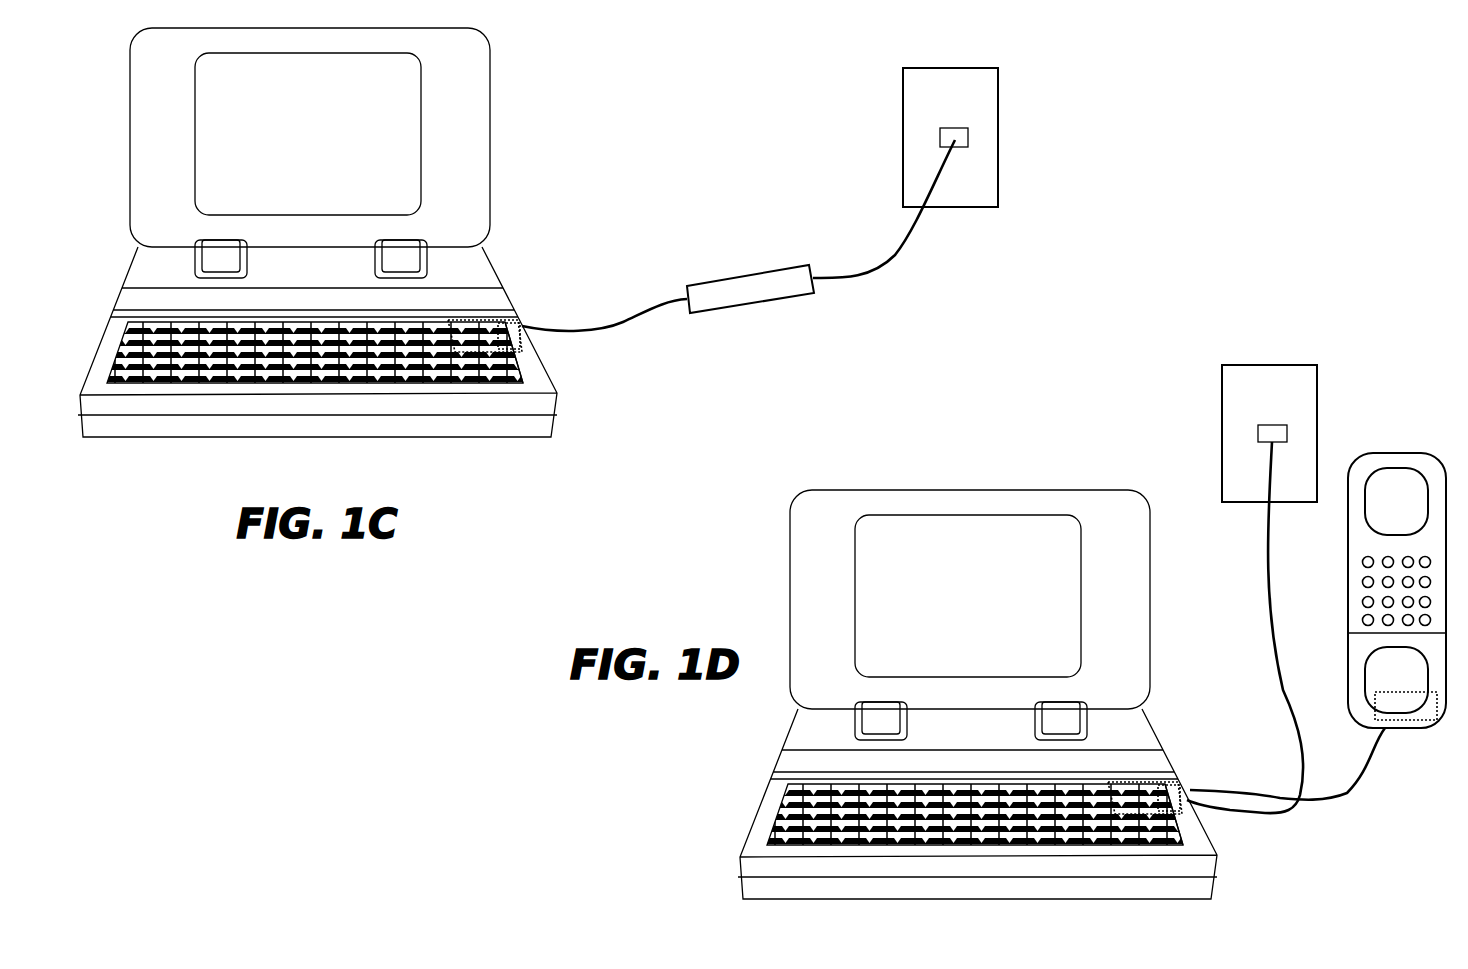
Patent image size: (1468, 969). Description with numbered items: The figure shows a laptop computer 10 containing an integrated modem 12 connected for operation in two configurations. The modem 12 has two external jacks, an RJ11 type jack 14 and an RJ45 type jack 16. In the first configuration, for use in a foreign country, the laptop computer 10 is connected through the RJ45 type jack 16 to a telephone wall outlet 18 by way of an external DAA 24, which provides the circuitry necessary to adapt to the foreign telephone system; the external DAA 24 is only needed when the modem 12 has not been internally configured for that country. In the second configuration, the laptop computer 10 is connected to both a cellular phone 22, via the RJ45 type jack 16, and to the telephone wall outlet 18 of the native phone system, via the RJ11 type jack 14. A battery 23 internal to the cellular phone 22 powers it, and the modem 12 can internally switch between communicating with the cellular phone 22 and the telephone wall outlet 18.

In FIG. 1C, the laptop computer 10 is at (83, 440).
In FIG. 1D, the laptop computer 10 is at (745, 850).
In FIG. 1C, the modem 12 is at (517, 317).
In FIG. 1D, the modem 12 is at (1173, 778).
In FIG. 1C, the RJ11 type jack 14 is at (533, 345).
In FIG. 1D, the RJ11 type jack 14 is at (1193, 805).
In FIG. 1C, the RJ45 type jack 16 is at (522, 327).
In FIG. 1D, the RJ45 type jack 16 is at (1185, 789).
In FIG. 1C, the telephone wall outlet 18 is at (965, 207).
In FIG. 1D, the telephone wall outlet 18 is at (1282, 365).
In FIG. 1D, the cellular phone 22 is at (1405, 728).
In FIG. 1D, the battery 23 is at (1322, 637).
In FIG. 1C, the external DAA 24 is at (725, 310).